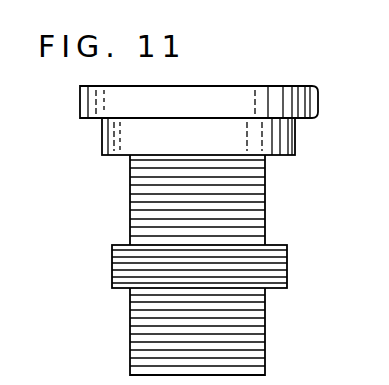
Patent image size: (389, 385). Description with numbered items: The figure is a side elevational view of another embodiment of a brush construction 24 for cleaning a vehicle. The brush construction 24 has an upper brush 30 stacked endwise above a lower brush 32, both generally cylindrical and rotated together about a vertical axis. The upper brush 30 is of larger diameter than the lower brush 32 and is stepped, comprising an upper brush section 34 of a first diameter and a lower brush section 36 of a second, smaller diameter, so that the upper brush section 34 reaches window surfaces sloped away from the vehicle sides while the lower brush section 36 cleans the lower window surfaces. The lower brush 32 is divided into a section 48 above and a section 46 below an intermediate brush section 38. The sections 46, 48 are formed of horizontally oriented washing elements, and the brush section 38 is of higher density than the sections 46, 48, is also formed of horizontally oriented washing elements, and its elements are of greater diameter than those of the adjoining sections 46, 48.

The brush construction 24 is at (186, 267).
The upper brush 30 is at (203, 128).
The lower brush 32 is at (199, 333).
The upper brush section 34 is at (325, 95).
The lower brush section 36 is at (302, 136).
The brush section 38 is at (294, 259).
The brush section 46 is at (272, 325).
The brush section 48 is at (272, 199).